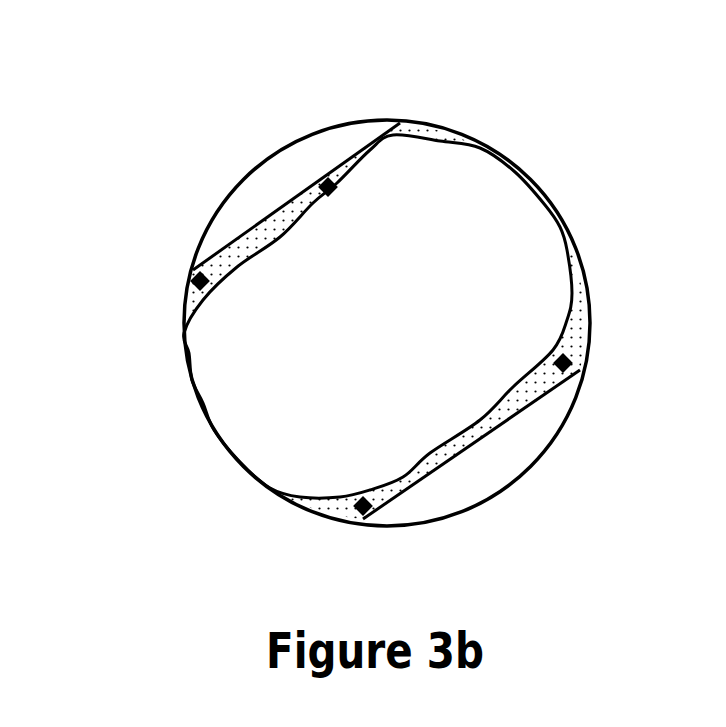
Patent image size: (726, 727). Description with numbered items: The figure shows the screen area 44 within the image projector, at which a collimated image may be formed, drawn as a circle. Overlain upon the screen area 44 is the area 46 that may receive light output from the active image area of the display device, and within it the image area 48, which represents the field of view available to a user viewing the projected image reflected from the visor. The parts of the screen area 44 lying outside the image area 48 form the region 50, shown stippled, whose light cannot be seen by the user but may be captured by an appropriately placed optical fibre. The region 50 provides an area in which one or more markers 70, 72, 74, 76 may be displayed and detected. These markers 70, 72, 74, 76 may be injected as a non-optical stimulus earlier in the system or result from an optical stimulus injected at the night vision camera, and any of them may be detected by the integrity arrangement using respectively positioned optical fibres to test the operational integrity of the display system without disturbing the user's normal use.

The screen area 44 is at (250, 195).
The active image area 46 is at (483, 437).
The image area 48 is at (503, 198).
The region 50 is at (195, 305).
The marker 70 is at (195, 272).
The marker 72 is at (328, 178).
The marker 74 is at (580, 370).
The marker 76 is at (368, 520).